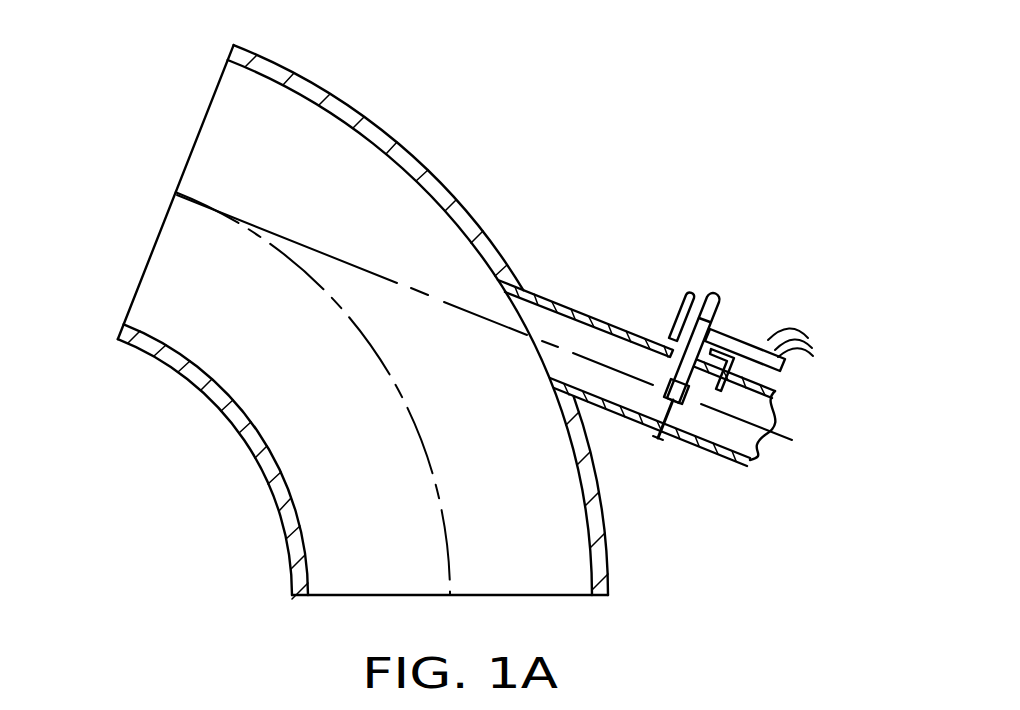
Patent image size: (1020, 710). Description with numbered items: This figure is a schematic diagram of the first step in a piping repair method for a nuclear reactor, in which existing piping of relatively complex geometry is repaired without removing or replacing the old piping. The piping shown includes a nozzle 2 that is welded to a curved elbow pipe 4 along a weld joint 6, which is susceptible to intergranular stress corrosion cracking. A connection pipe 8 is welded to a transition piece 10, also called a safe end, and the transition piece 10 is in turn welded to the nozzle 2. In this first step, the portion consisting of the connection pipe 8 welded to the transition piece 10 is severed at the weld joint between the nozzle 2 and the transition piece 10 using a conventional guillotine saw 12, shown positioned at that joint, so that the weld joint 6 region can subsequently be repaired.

The nozzle 2 is at (583, 313).
The curved elbow pipe 4 is at (401, 149).
The weld joint 6 is at (540, 377).
The connection pipe 8 is at (730, 463).
The transition piece 10 is at (680, 438).
The guillotine saw 12 is at (728, 283).